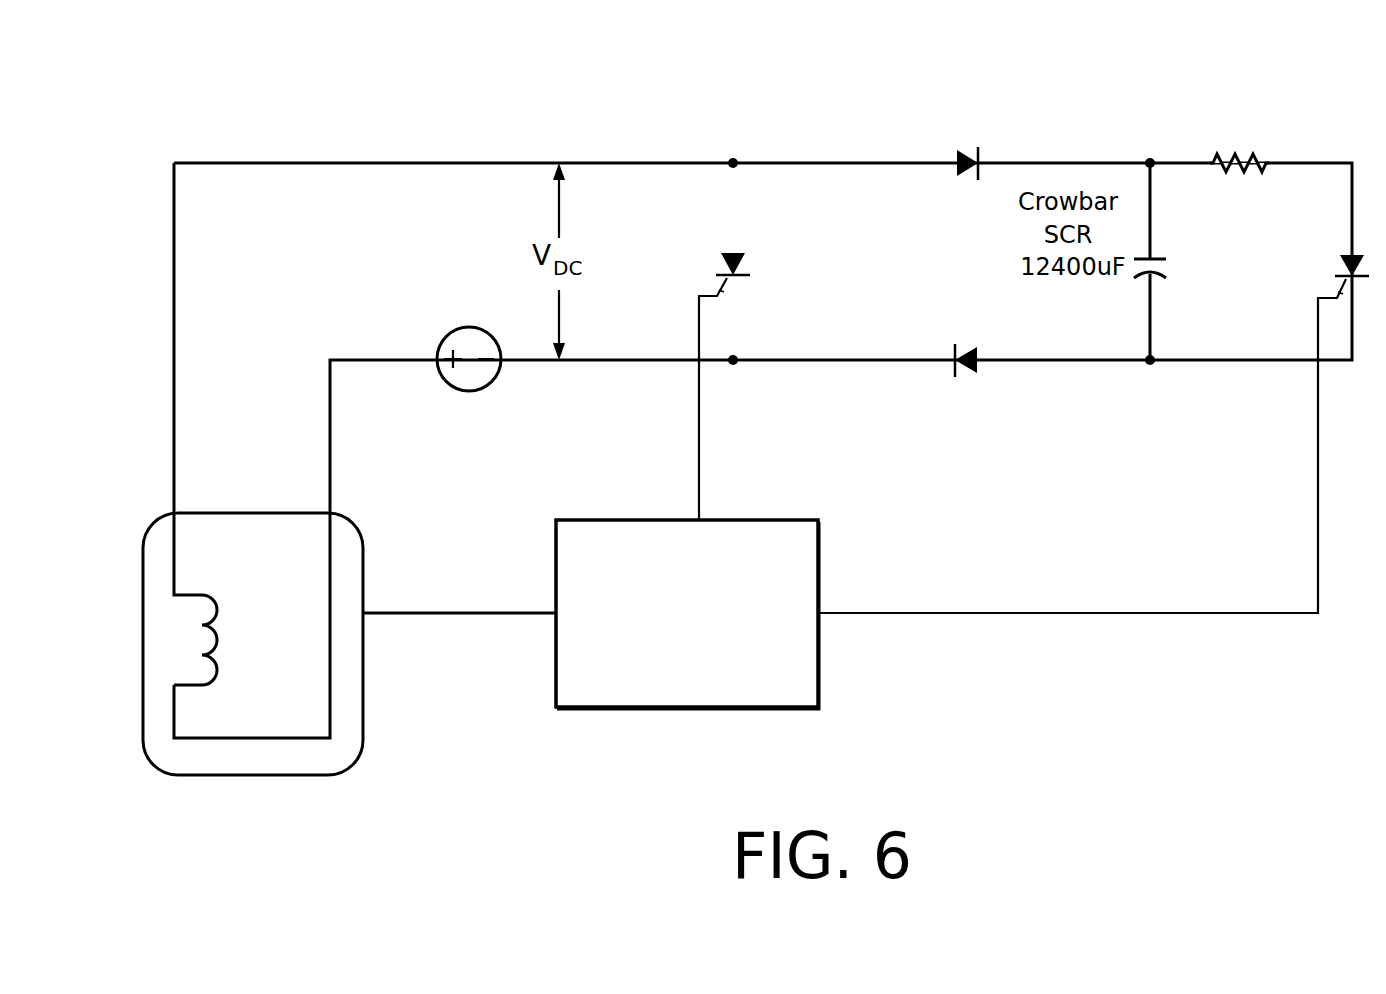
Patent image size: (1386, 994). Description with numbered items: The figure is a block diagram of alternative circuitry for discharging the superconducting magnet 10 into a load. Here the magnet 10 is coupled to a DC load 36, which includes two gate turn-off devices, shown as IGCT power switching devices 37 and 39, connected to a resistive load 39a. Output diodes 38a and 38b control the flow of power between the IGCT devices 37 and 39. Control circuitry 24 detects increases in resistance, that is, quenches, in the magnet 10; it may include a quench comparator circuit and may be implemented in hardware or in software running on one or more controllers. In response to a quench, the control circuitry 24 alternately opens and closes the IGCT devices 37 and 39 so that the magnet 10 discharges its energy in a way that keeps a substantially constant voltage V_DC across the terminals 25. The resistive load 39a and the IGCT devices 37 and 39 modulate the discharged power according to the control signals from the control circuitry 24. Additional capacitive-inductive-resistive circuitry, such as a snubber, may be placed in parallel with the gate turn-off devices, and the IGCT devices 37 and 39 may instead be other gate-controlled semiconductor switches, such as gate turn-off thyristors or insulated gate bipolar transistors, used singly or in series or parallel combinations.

The superconducting magnet 10 is at (363, 703).
The control circuitry 24 is at (634, 709).
The terminals 25 is at (397, 165).
The DC load 36 is at (1102, 58).
The IGCT power switching device 37 is at (730, 256).
The output diode 38a is at (968, 150).
The output diode 38b is at (963, 368).
The IGCT power switching device 39 is at (1349, 254).
The resistive load 39a is at (1230, 155).